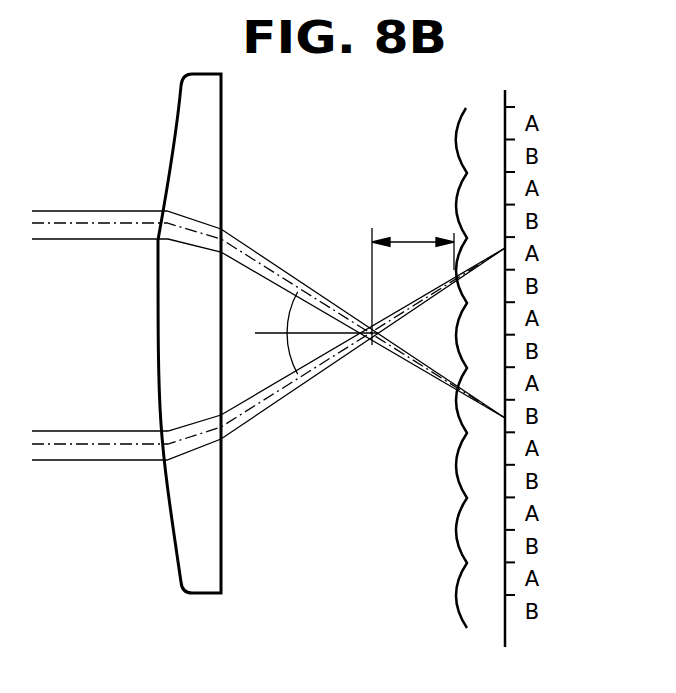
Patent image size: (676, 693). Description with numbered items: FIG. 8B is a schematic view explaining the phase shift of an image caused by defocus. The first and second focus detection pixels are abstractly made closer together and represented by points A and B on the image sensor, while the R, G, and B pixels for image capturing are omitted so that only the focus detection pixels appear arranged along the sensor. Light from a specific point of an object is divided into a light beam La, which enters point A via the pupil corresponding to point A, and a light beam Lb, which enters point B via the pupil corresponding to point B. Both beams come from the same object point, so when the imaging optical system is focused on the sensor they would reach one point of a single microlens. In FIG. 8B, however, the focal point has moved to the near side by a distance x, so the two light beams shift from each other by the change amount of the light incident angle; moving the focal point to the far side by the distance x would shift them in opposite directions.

The light beam Φ La is at (268, 370).
The light beam Φ Lb is at (268, 298).
The distance x is at (413, 243).